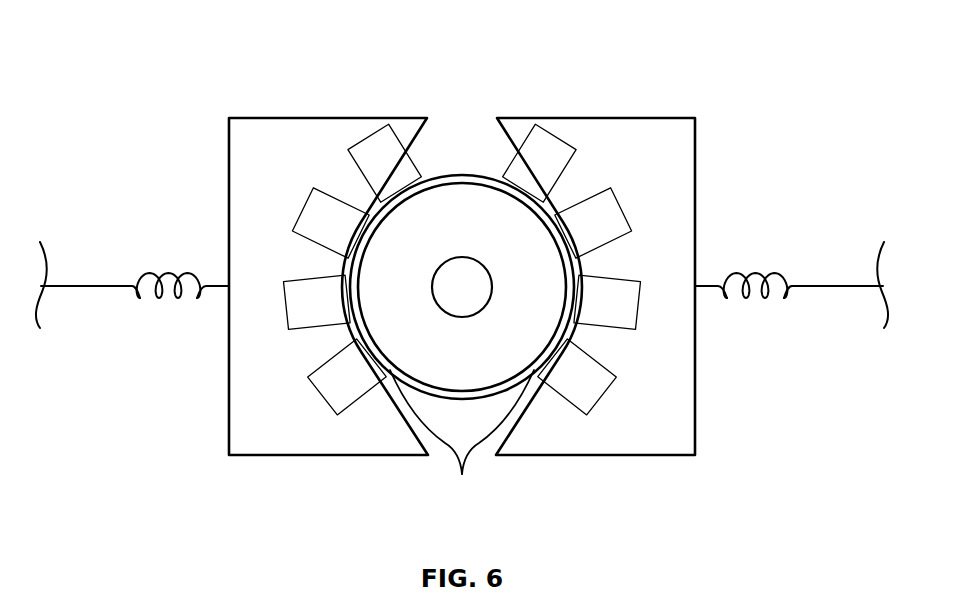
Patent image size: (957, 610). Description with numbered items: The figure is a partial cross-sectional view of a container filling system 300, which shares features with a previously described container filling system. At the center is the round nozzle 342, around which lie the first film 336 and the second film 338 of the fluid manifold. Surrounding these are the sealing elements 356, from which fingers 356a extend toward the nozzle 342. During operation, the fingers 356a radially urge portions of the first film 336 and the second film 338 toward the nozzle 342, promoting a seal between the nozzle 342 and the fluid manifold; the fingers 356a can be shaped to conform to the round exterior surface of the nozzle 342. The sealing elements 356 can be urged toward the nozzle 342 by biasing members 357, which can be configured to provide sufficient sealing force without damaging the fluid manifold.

The container filling system 300 is at (649, 55).
The first film 336 is at (450, 175).
The second film 338 is at (471, 184).
The nozzle 342 is at (452, 192).
The sealing elements 356 is at (228, 165).
The fingers 356a is at (462, 474).
The biasing members 357 is at (153, 275).